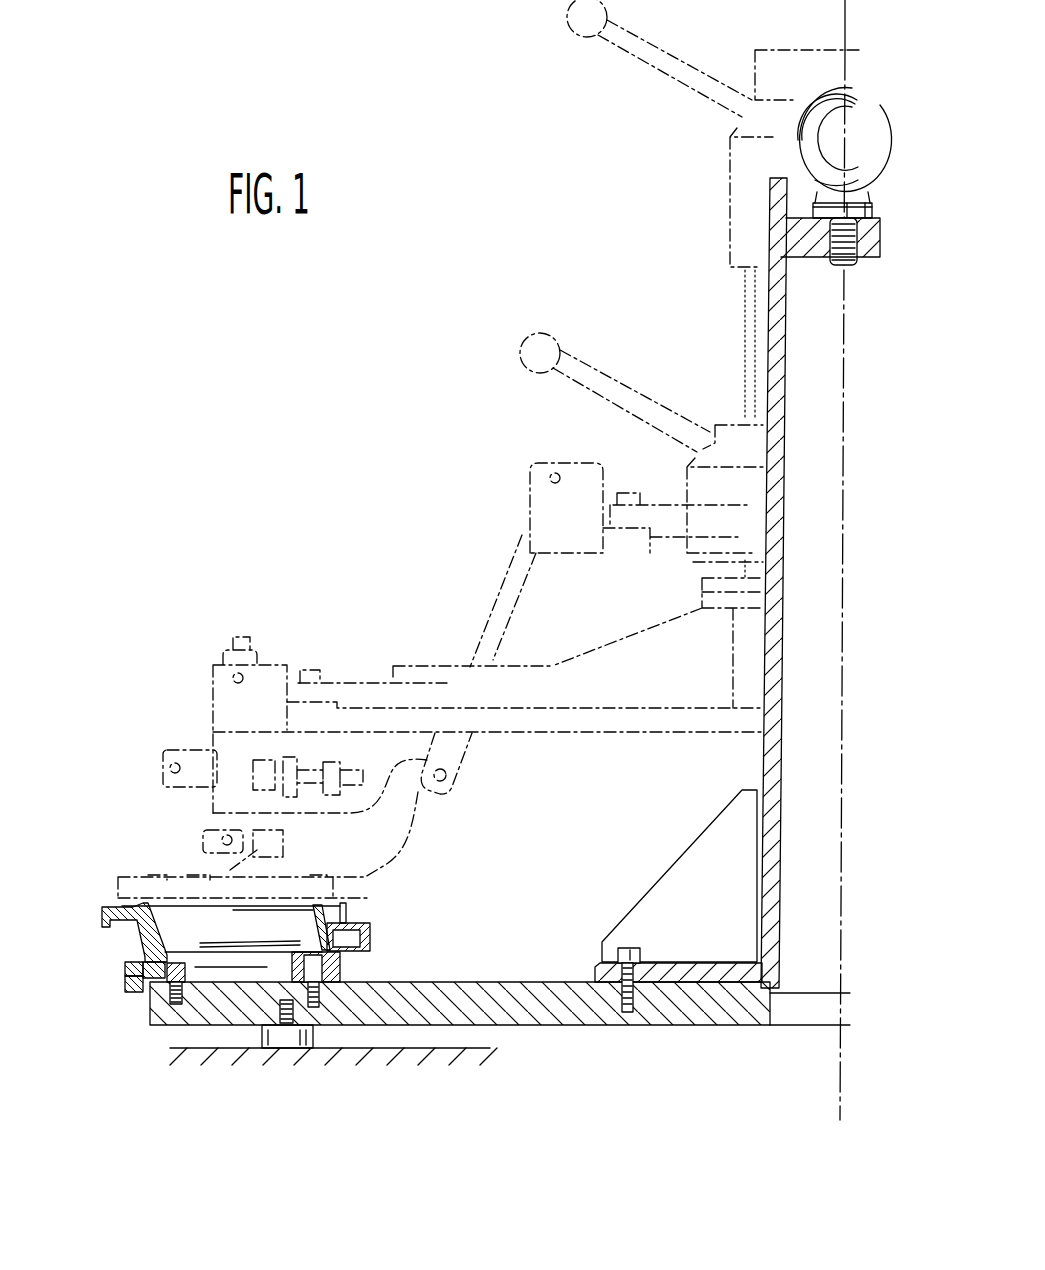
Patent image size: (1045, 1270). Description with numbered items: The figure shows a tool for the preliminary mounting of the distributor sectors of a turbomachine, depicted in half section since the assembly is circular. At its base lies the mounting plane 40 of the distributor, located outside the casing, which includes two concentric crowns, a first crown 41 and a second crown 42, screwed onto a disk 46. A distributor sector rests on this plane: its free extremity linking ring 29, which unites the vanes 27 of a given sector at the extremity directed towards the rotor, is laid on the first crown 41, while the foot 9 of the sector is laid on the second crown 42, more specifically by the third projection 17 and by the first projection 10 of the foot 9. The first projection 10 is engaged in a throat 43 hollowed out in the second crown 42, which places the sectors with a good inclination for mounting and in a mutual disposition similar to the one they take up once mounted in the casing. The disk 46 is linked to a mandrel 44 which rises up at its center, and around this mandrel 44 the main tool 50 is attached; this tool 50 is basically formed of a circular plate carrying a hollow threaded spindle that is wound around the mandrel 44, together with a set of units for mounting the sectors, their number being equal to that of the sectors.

The foot 9 is at (98, 910).
The first projection 10 is at (125, 967).
The third projection 17 is at (168, 958).
The vanes 27 is at (186, 922).
The free extremity linking ring 29 is at (374, 921).
The mounting plane 40 is at (700, 1033).
The first crown 41 is at (340, 967).
The second crown 42 is at (138, 992).
The throat 43 is at (128, 978).
The mandrel 44 is at (760, 770).
The disk 46 is at (562, 1007).
The main tool 50 is at (722, 222).